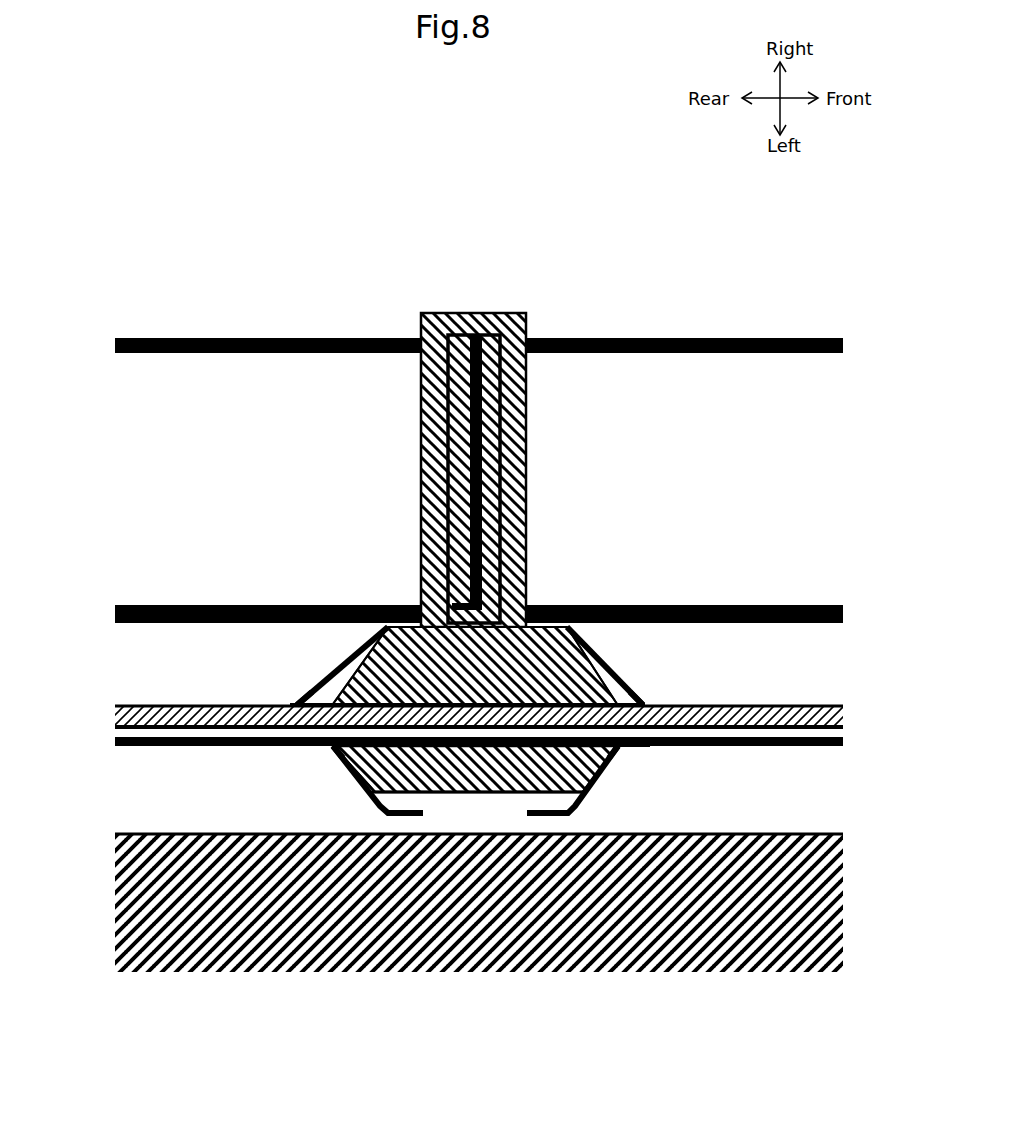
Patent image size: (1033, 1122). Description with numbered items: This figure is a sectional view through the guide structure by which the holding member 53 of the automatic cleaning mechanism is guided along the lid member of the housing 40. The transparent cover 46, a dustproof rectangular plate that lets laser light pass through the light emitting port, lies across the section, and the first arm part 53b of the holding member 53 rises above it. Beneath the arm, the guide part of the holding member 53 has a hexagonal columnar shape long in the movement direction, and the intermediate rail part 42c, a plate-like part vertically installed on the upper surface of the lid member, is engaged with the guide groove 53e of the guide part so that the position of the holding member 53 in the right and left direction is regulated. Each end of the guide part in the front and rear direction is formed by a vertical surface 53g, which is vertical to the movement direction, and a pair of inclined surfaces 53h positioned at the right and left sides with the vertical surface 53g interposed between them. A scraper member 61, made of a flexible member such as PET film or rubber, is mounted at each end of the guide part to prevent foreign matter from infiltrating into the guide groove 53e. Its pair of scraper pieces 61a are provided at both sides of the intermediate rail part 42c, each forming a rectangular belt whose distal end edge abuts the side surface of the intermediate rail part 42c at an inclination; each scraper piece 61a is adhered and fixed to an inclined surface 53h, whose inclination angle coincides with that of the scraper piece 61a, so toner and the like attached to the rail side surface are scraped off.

The housing 40 is at (232, 336).
The transparent cover 46 is at (707, 405).
The holding member 53 is at (469, 601).
The first arm part 53b is at (528, 527).
The guide groove 53e is at (483, 795).
The vertical surface 53g is at (300, 702).
The inclined surface 53h is at (365, 645).
The scraper member 61 is at (346, 648).
The scraper piece 61a is at (313, 697).
The intermediate rail part 42c is at (165, 712).